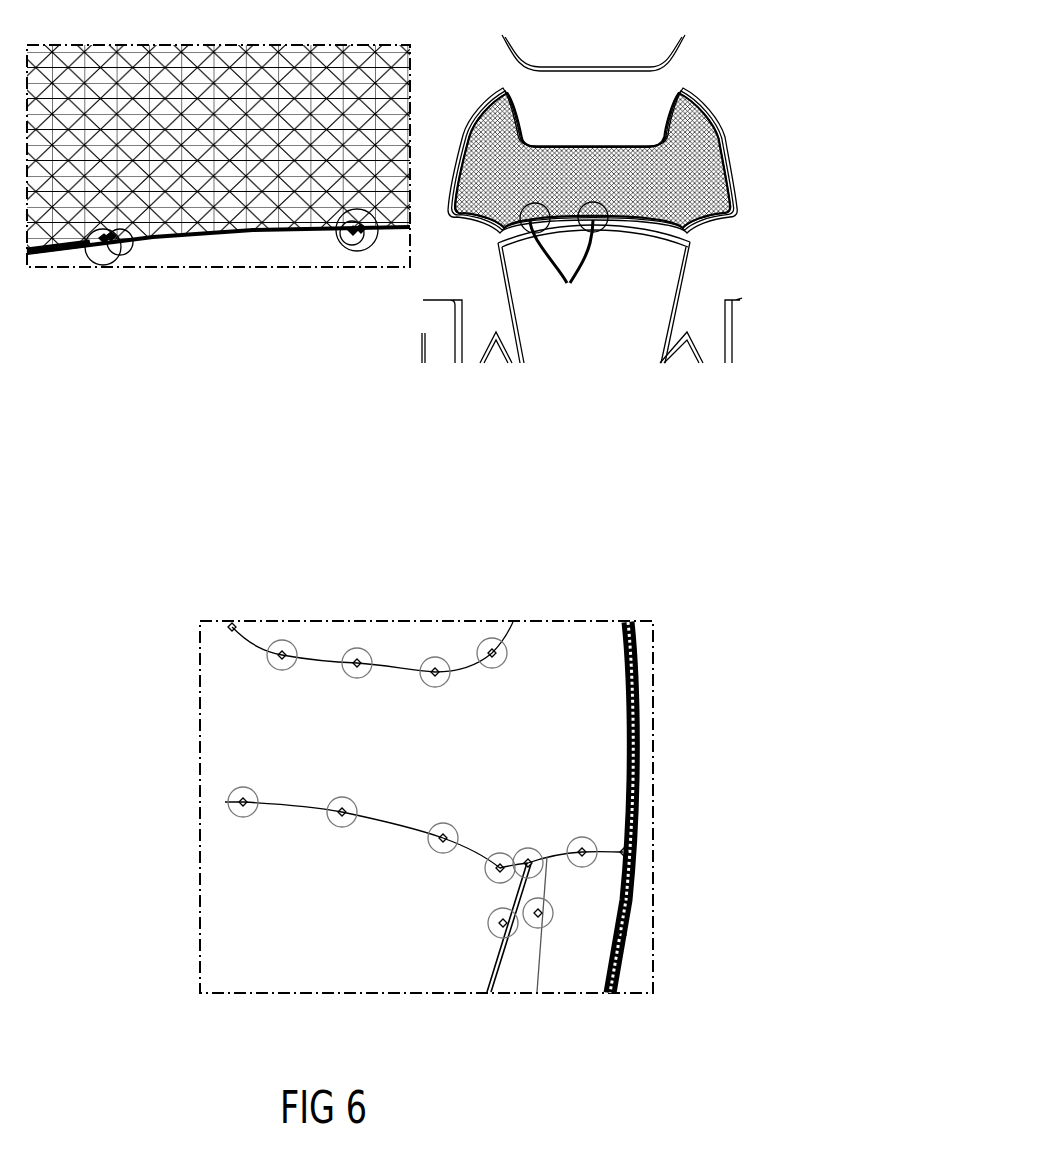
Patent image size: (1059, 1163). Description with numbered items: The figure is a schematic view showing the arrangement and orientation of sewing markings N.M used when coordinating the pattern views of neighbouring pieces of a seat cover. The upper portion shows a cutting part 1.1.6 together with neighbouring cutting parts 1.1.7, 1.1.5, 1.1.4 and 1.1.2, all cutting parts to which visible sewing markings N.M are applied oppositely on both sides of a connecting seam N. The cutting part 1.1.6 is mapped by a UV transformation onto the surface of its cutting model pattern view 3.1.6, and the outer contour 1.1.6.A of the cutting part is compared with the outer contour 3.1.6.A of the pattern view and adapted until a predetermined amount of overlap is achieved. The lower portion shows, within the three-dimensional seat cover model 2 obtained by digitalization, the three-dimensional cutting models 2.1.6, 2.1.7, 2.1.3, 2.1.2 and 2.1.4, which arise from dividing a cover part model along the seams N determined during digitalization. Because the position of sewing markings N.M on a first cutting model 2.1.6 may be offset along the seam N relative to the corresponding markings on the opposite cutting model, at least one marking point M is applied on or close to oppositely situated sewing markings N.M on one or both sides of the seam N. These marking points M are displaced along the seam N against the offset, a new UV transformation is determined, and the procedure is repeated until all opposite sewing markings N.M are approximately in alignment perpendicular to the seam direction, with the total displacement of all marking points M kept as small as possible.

The cutting part 1.1.7 is at (678, 37).
The cutting part 1.1.6 is at (700, 102).
The outer contour of cutting part 1.1.6.A is at (723, 127).
The cutting model pattern view 3.1.6 is at (712, 163).
The outer contour of cutting model pattern view 3.1.6.A is at (735, 198).
The cutting part 1.1.5 is at (670, 297).
The cutting part 1.1.4 is at (733, 340).
The cutting part 1.1.2 is at (688, 358).
The three-dimensional seat cover model 2 is at (642, 783).
The cutting model 2.1.6 is at (613, 707).
The cutting model 2.1.7 is at (323, 627).
The cutting model 2.1.3 is at (277, 953).
The cutting model 2.1.2 is at (518, 970).
The cutting model 2.1.4 is at (595, 963).
The seam N is at (253, 233).
The marking point M is at (120, 233).
The sewing marking N.M is at (352, 882).